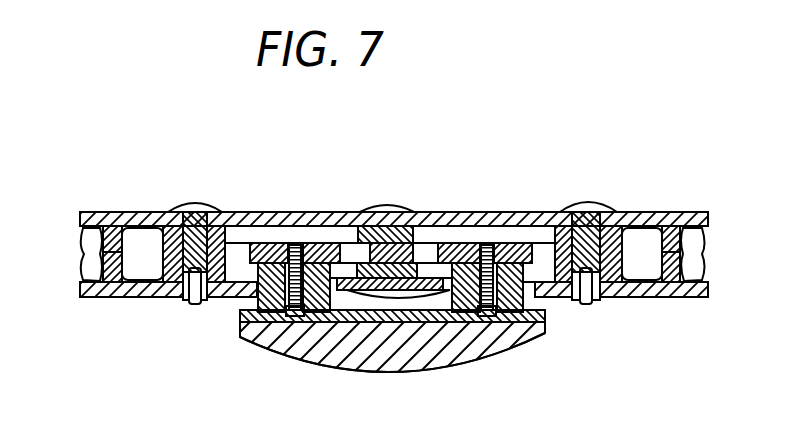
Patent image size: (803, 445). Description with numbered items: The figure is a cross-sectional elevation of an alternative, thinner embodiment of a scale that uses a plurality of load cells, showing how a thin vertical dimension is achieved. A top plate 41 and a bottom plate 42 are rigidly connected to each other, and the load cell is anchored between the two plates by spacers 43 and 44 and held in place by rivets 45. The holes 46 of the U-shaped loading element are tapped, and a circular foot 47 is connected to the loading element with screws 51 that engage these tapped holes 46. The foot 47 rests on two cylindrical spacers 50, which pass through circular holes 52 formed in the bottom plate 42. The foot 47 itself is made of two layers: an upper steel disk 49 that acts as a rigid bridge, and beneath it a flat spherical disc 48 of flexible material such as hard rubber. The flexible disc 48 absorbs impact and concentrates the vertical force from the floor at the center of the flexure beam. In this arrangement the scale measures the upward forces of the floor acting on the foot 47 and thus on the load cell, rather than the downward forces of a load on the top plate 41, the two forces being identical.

The top plate 41 is at (112, 224).
The bottom plate 42 is at (113, 287).
The spacer 43 is at (254, 211).
The spacer 44 is at (393, 254).
The rivet 45 is at (190, 207).
The hole 46 is at (312, 212).
The circular foot 47 is at (243, 338).
The flat spherical disc 48 is at (485, 357).
The steel disk 49 is at (443, 320).
The cylindrical spacer 50 is at (245, 307).
The screw 51 is at (290, 312).
The circular hole 52 is at (340, 312).